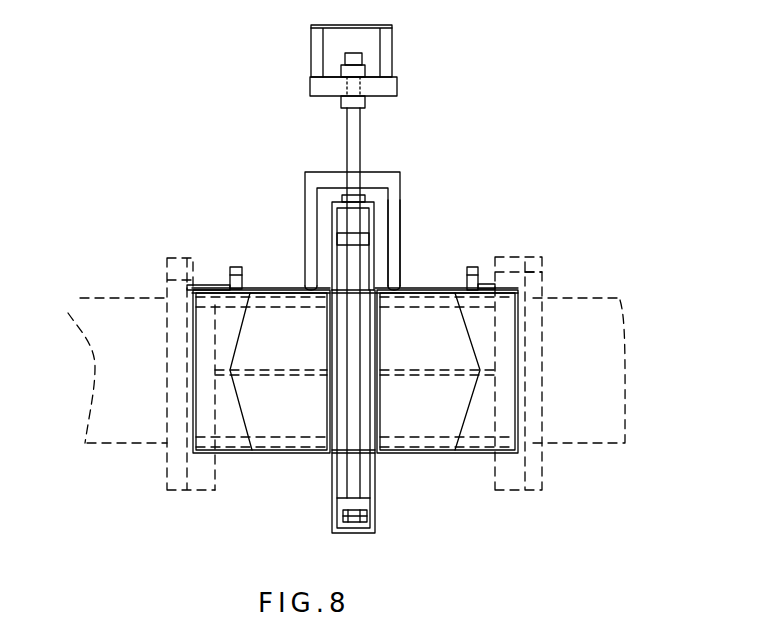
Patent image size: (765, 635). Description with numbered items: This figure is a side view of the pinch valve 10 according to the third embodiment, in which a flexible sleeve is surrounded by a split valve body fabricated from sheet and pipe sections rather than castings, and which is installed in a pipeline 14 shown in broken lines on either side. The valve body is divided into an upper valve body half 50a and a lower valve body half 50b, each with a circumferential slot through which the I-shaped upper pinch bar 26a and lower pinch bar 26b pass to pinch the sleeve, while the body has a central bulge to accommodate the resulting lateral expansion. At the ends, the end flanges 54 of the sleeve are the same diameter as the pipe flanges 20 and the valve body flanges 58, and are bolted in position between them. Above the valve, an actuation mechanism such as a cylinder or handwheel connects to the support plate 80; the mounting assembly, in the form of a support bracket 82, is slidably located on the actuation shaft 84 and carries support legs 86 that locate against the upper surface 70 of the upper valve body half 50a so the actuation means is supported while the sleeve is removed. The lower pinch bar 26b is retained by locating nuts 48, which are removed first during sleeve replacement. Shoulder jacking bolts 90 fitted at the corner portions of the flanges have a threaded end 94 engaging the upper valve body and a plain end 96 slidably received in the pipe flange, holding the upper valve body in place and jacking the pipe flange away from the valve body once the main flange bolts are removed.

The suspension assembly 10 is at (490, 168).
The wall structure 14 is at (88, 338).
The pipe flange 20 is at (545, 269).
The upper pinch bar 26a is at (340, 232).
The lower pinch bar 26b is at (370, 505).
The locating nut 48 is at (345, 518).
The upper valve body half 50a is at (440, 337).
The lower valve body half 50b is at (440, 416).
The end flange 54 is at (520, 260).
The valve body flange 58 is at (504, 250).
The upper surface 70 is at (412, 288).
The support plate 80 is at (321, 88).
The support bracket 82 is at (378, 178).
The actuation shaft 84 is at (347, 146).
The support leg 86 is at (393, 213).
The shoulder jacking bolt 90 is at (243, 271).
The threaded end 94 is at (196, 245).
The plain end 96 is at (160, 265).